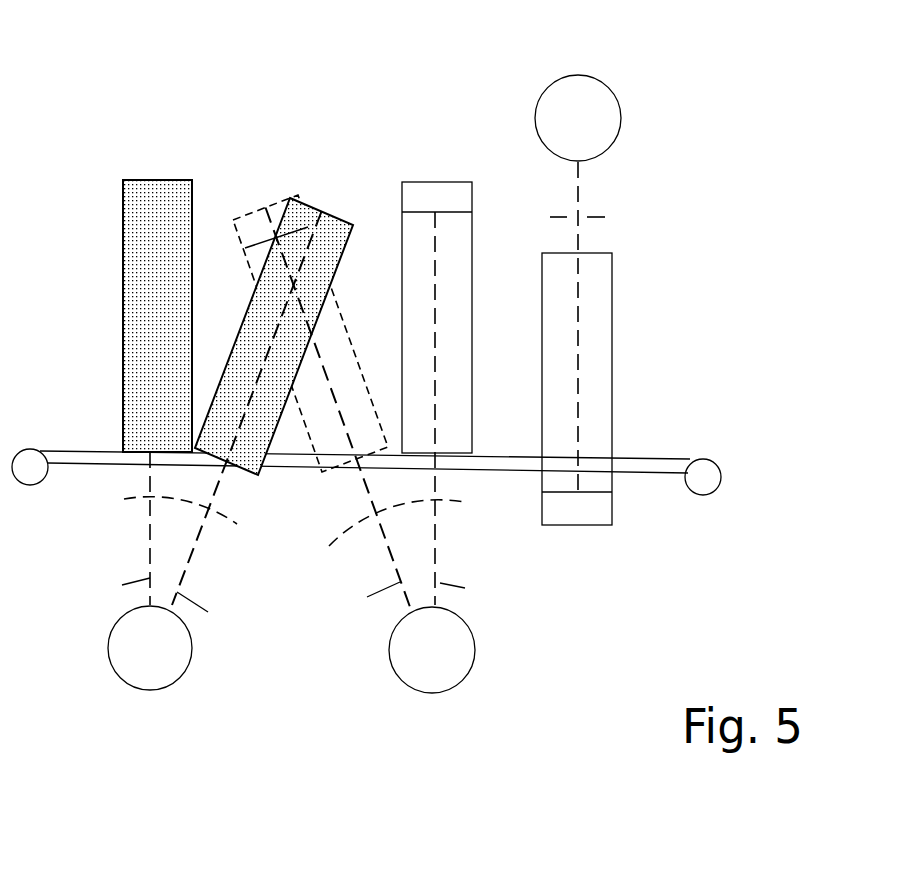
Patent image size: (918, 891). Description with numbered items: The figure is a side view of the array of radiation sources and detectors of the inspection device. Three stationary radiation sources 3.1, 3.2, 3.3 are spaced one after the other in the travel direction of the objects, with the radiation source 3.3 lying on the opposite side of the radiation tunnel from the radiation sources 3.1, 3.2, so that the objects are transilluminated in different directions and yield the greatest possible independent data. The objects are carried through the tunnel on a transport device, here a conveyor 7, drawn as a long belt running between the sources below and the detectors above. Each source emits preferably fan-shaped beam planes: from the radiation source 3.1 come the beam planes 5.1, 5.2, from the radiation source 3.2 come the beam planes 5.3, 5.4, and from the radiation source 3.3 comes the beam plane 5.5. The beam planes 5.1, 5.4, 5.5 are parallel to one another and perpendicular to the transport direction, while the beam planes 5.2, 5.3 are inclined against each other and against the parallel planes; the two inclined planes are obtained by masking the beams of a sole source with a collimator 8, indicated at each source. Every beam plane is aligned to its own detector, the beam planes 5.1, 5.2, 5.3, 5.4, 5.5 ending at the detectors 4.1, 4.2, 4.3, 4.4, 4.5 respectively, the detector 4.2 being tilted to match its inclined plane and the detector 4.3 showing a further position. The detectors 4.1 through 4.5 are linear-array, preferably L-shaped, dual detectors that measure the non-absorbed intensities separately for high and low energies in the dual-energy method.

The radiation source 3.1 is at (152, 690).
The radiation source 3.2 is at (435, 693).
The radiation source 3.3 is at (588, 85).
The detector 4.1 is at (125, 313).
The detector 4.2 is at (333, 217).
The detector 4.3 is at (270, 208).
The detector 4.4 is at (422, 190).
The detector 4.5 is at (605, 372).
The beam plane 5.1 is at (109, 533).
The beam plane 5.2 is at (207, 615).
The beam plane 5.3 is at (338, 415).
The beam plane 5.4 is at (477, 596).
The beam plane 5.5 is at (578, 240).
The conveyor 7 is at (706, 479).
The collimator 8 is at (128, 498).